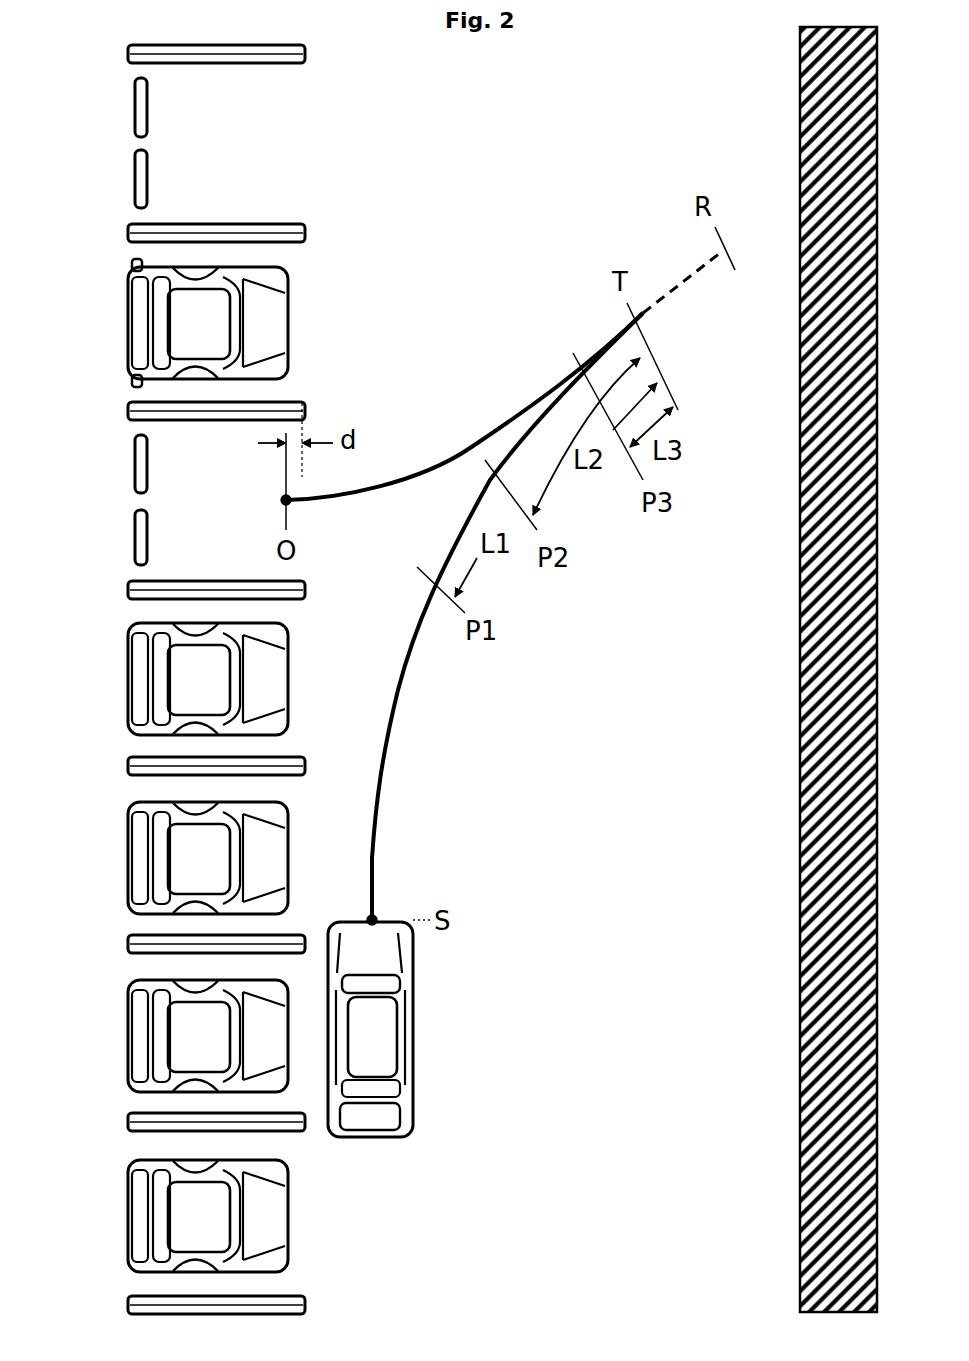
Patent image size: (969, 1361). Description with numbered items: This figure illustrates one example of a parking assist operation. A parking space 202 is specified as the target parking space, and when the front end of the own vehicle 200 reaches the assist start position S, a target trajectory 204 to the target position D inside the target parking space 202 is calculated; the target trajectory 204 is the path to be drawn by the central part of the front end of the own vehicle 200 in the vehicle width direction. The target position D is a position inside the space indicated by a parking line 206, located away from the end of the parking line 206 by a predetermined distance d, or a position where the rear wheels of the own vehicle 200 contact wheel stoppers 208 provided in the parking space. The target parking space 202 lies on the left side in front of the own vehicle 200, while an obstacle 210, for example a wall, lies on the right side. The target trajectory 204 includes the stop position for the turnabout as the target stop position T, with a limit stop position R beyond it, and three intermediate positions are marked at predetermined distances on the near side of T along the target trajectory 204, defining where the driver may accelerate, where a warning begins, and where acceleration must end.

The own vehicle 200 is at (377, 1043).
The parking space 202 is at (185, 500).
The target trajectory 204 is at (387, 750).
The parking line 206 is at (297, 405).
The wheel stoppers 208 is at (142, 548).
The obstacle 210 is at (803, 126).